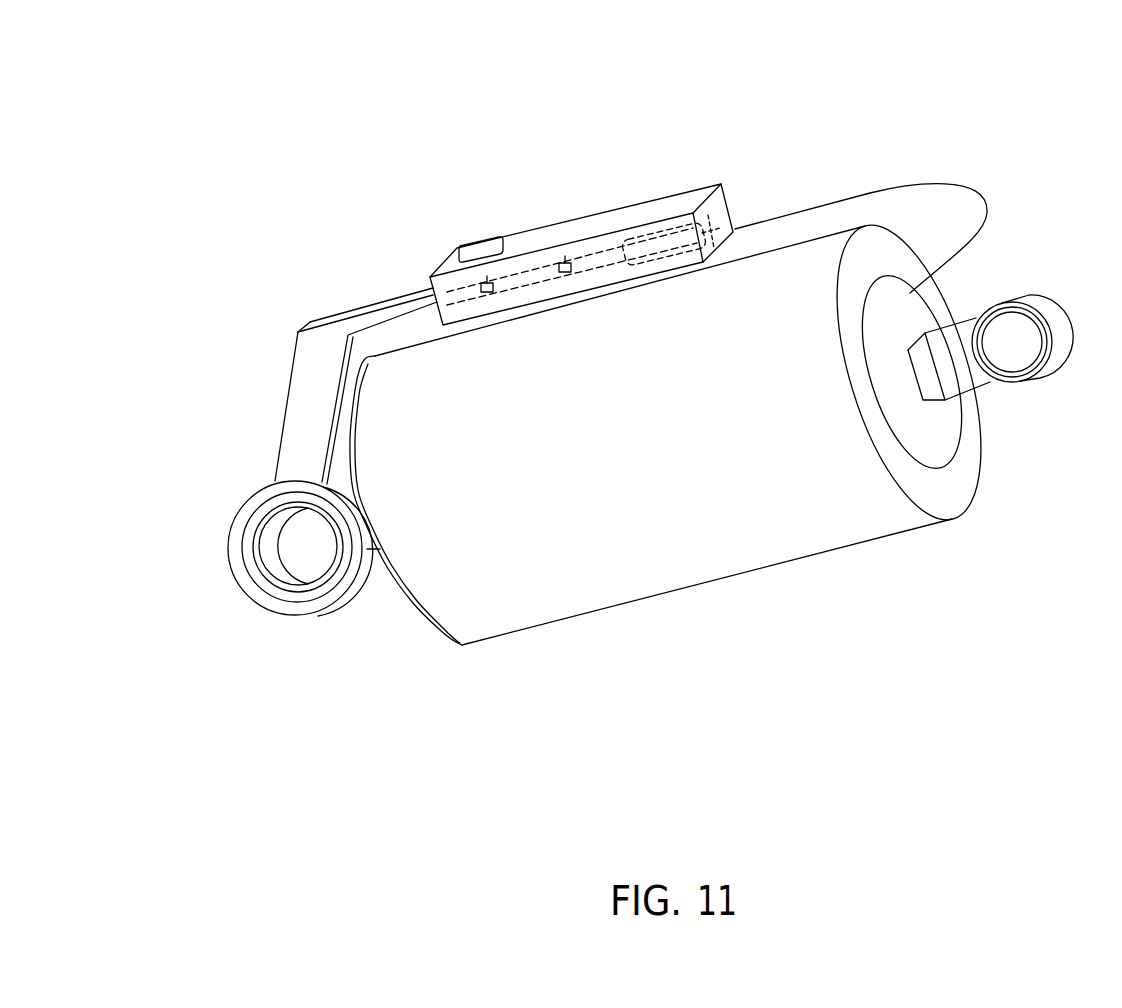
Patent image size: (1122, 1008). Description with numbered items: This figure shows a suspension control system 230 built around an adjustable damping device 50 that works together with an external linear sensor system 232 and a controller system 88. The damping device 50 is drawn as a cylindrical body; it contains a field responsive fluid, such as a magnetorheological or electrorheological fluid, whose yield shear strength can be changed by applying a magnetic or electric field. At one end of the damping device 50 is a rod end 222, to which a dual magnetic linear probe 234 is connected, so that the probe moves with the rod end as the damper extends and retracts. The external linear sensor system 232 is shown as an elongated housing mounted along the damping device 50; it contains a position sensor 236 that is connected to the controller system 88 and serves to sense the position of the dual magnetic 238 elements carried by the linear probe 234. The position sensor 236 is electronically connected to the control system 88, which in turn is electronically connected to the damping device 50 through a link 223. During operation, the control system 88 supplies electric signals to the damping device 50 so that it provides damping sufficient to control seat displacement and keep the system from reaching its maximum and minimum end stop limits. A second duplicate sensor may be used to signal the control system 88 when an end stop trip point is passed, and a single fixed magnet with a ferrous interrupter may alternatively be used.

The suspension control system 230 is at (274, 122).
The adjustable damping device 50 is at (675, 592).
The rod end 222 is at (303, 638).
The dual magnetic linear probe 234 is at (320, 352).
The external linear sensor system 232 is at (603, 207).
The position sensor 236 is at (477, 246).
The dual magnetic 238 is at (565, 262).
The controller system 88 is at (706, 233).
The link 223 is at (888, 190).